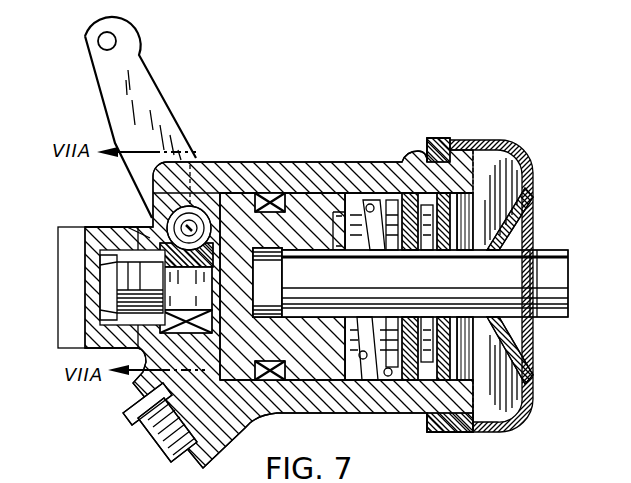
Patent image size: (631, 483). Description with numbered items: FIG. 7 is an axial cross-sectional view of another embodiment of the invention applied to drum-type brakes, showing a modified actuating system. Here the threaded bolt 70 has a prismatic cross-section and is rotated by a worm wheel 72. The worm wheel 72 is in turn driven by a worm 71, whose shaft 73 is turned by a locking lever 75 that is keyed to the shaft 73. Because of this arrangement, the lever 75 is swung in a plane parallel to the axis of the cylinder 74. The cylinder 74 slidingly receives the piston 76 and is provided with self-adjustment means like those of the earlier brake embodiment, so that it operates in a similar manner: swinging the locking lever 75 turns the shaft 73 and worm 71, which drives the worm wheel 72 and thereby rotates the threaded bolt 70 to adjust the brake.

The threaded bolt 70 is at (160, 245).
The worm 71 is at (127, 227).
The worm wheel 72 is at (160, 320).
The shaft 73 is at (187, 228).
The cylinder 74 is at (167, 383).
The locking lever 75 is at (102, 62).
The piston 76 is at (305, 362).